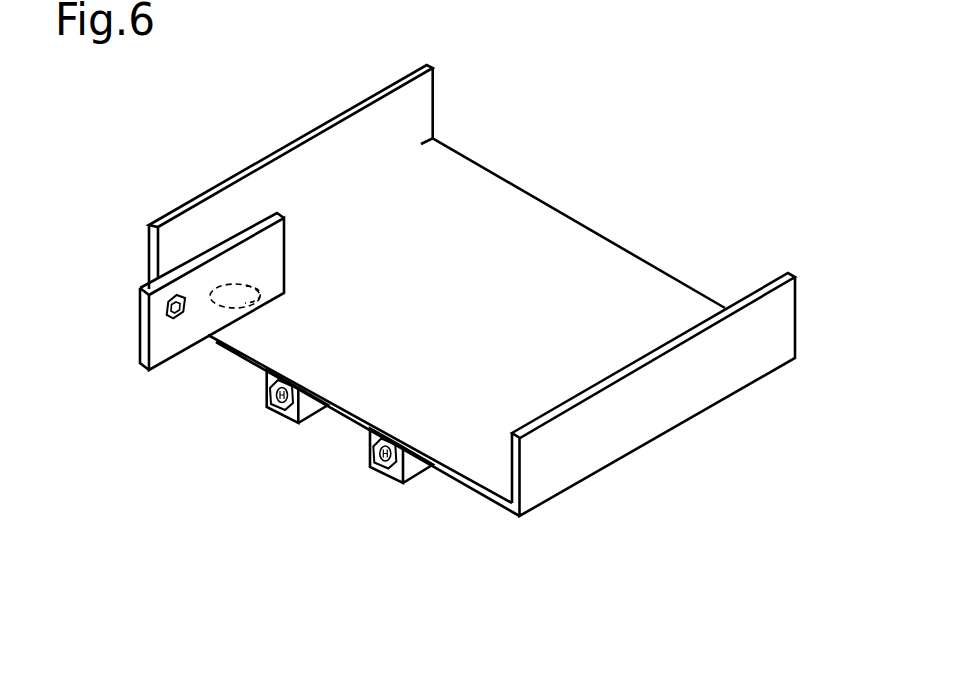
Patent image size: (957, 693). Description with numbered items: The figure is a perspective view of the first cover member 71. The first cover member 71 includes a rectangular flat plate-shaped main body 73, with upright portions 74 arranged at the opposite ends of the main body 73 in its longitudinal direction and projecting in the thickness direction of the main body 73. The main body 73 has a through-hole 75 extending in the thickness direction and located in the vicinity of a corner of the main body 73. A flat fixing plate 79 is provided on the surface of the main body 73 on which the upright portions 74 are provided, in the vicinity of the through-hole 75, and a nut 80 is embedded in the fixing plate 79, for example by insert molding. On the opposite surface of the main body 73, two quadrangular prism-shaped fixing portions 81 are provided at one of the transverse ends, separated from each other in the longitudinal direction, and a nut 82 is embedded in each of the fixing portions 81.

The first cover member 71 is at (170, 148).
The main body 73 is at (558, 218).
The upright portions 74 is at (427, 98).
The through-hole 75 is at (258, 289).
The fixing plate 79 is at (277, 243).
The nut 80 is at (179, 294).
The fixing portions 81 is at (310, 403).
The nut 82 is at (278, 412).